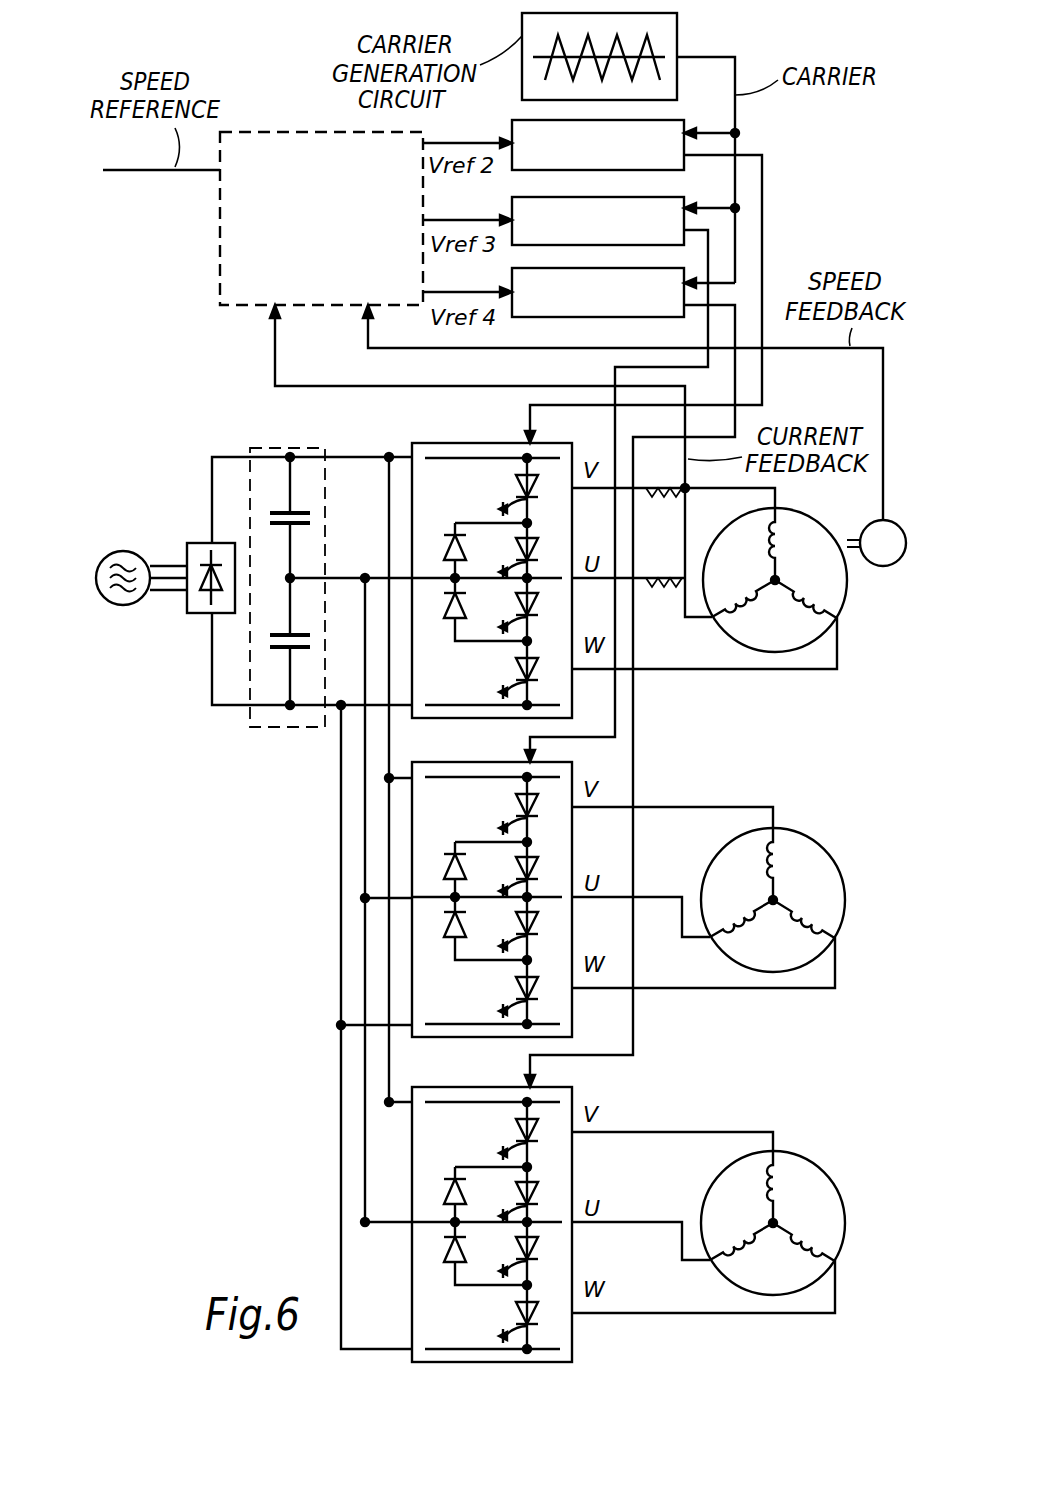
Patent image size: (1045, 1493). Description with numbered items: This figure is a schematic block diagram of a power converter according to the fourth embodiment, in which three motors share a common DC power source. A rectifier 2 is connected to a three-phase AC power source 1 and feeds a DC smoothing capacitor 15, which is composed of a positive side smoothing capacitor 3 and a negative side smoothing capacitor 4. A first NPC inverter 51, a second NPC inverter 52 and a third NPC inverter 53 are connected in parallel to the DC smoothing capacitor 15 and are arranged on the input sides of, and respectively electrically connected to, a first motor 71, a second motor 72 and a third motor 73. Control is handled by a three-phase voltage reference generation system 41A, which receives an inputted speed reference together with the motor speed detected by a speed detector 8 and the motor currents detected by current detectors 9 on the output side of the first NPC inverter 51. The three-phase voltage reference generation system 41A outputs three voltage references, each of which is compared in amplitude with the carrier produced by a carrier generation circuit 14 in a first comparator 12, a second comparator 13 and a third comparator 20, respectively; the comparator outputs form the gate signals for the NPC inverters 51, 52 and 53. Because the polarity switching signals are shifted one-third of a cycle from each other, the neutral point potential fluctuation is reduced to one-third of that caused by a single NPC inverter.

The 3-phase AC power source 1 is at (123, 607).
The rectifier 2 is at (197, 614).
The positive side smoothing capacitor 3 is at (282, 528).
The negative side smoothing capacitor 4 is at (282, 652).
The speed detector 8 is at (898, 568).
The current detectors 9 is at (665, 499).
The first comparator 12 is at (686, 119).
The second comparator 13 is at (675, 197).
The carrier generation circuit 14 is at (678, 38).
The DC smoothing capacitor 15 is at (266, 446).
The third comparator 20 is at (687, 270).
The 3-phase voltage reference generation system 41A is at (220, 273).
The first NPC inverter 51 is at (423, 440).
The second NPC inverter 52 is at (466, 760).
The third NPC inverter 53 is at (572, 1093).
The first motor 71 is at (843, 607).
The second motor 72 is at (815, 836).
The third motor 73 is at (826, 1168).